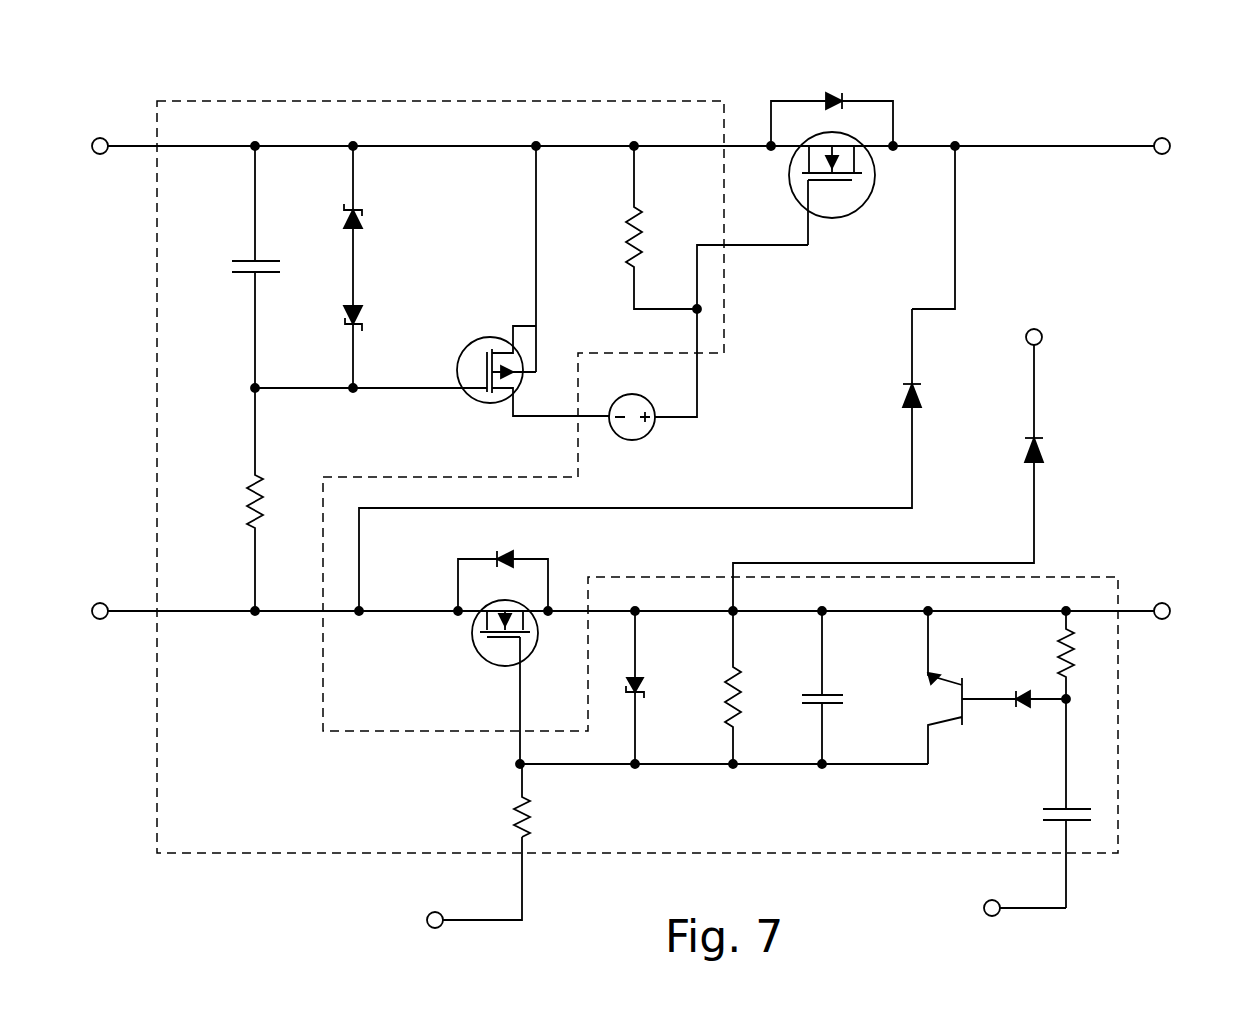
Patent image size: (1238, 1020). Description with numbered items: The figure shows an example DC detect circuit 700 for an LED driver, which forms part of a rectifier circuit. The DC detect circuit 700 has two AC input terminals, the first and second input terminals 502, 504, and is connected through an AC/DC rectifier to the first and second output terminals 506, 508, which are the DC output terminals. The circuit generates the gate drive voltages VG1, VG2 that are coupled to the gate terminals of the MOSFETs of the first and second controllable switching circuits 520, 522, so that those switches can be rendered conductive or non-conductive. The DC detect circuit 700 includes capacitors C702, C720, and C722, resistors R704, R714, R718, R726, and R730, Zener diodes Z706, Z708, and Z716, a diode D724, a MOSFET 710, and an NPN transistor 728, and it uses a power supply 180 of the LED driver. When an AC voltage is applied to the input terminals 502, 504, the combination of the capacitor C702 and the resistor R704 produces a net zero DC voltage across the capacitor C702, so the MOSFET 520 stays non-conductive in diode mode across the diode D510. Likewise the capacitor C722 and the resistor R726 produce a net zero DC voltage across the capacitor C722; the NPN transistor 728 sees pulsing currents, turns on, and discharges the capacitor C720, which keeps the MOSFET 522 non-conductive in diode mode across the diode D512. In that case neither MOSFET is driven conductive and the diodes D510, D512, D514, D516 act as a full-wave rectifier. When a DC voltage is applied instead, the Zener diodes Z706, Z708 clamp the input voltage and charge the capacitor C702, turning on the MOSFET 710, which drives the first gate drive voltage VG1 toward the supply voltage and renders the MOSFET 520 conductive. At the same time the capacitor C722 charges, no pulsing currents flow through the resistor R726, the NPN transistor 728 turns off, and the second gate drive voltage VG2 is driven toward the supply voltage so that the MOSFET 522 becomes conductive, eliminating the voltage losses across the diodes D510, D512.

The DC detect circuit 700 is at (578, 101).
The first input terminal 502 is at (100, 138).
The second input terminal 504 is at (100, 619).
The first output terminal 506 is at (1162, 138).
The second output terminal 508 is at (1165, 619).
The capacitor C702 is at (240, 272).
The resistor R704 is at (245, 496).
The Zener diode Z706 is at (365, 232).
The Zener diode Z708 is at (368, 310).
The MOSFET 710 is at (481, 402).
The resistor R714 is at (626, 245).
The power supply 180 is at (648, 436).
The first controllable switching circuit 520 is at (870, 200).
The second controllable switching circuit 522 is at (476, 652).
The diode D510 is at (830, 93).
The diode D512 is at (508, 555).
The diode D514 is at (903, 397).
The diode D516 is at (1045, 457).
The Zener diode Z716 is at (645, 688).
The resistor R718 is at (743, 695).
The capacitor C720 is at (845, 696).
The capacitor C722 is at (1048, 806).
The diode D724 is at (1030, 706).
The resistor R726 is at (1058, 662).
The NPN transistor 728 is at (955, 716).
The resistor R730 is at (514, 826).
The first gate drive voltage VG1 is at (800, 248).
The second gate drive voltage VG2 is at (516, 700).